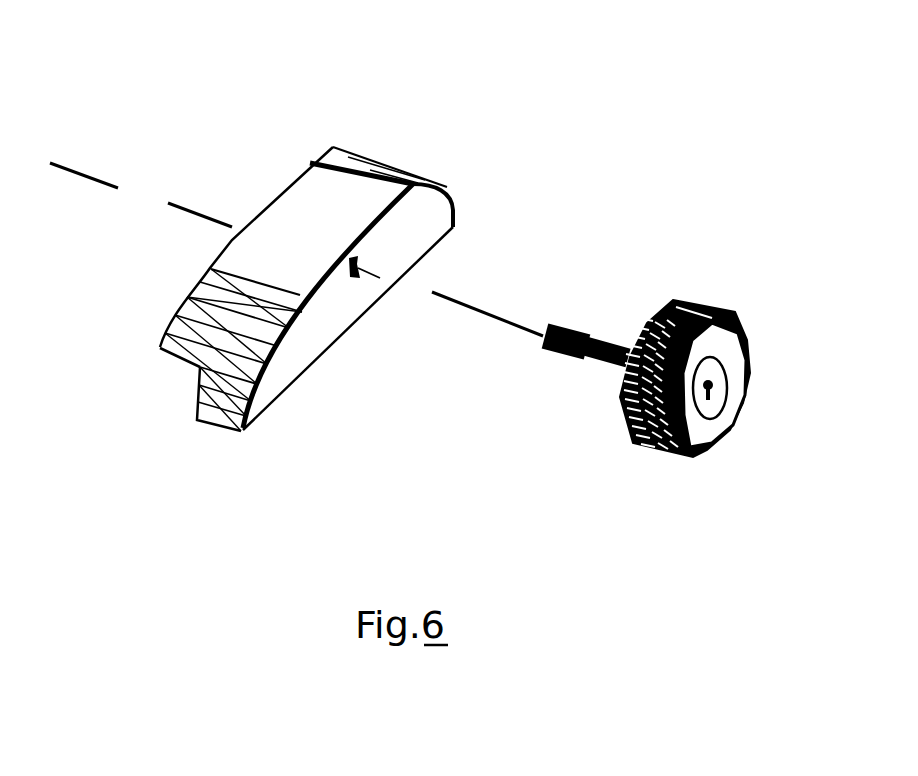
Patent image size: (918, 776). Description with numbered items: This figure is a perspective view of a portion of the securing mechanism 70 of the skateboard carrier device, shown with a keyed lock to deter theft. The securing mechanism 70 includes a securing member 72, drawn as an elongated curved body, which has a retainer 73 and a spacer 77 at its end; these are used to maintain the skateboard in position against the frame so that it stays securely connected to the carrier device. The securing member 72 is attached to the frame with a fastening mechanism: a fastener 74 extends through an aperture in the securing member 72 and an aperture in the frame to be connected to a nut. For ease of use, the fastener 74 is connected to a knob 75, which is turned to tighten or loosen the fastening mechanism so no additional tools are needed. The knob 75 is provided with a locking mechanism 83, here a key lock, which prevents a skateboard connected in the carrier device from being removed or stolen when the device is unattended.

The securing mechanism 70 is at (316, 262).
The securing member 72 is at (340, 147).
The retainer 73 is at (222, 428).
The fastener 74 is at (603, 336).
The knob 75 is at (727, 312).
The spacer 77 is at (181, 361).
The locking mechanism 83 is at (730, 370).